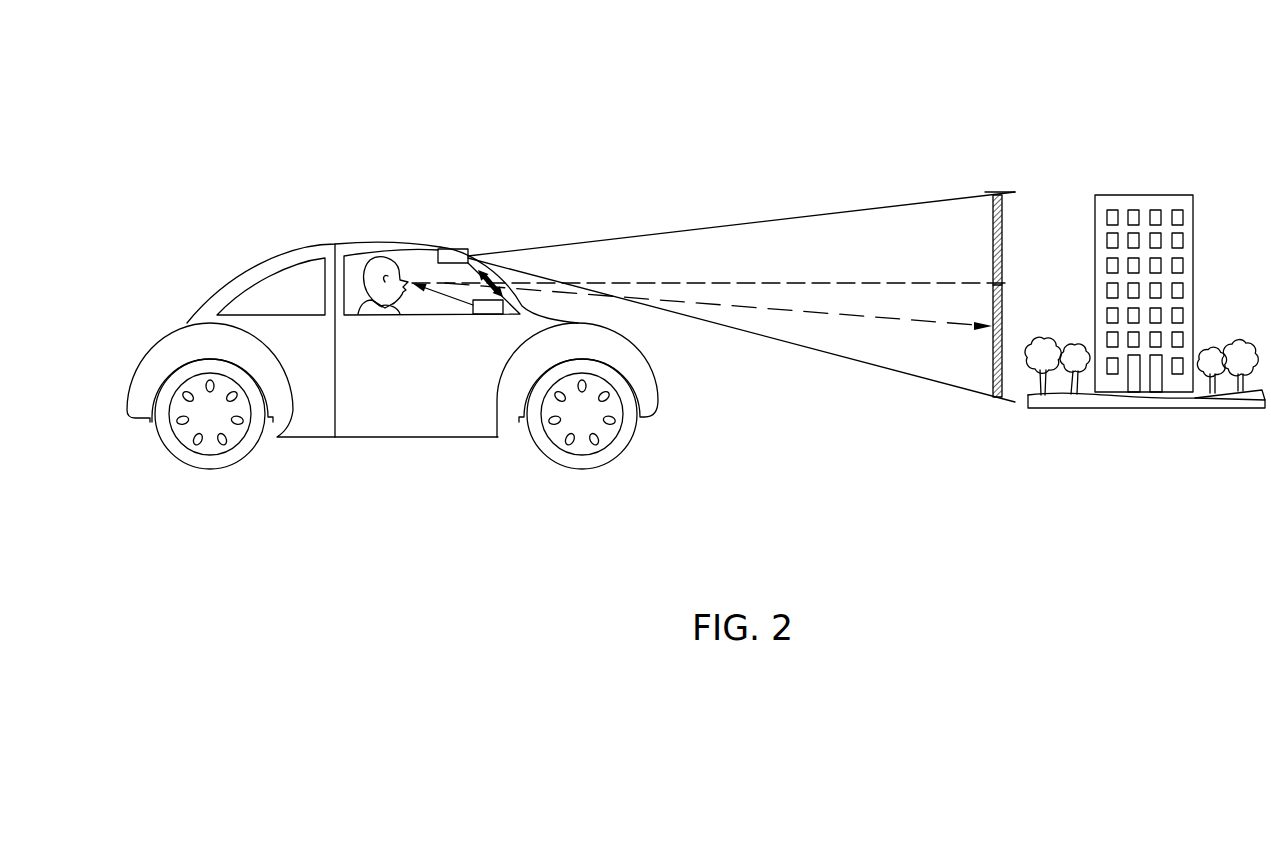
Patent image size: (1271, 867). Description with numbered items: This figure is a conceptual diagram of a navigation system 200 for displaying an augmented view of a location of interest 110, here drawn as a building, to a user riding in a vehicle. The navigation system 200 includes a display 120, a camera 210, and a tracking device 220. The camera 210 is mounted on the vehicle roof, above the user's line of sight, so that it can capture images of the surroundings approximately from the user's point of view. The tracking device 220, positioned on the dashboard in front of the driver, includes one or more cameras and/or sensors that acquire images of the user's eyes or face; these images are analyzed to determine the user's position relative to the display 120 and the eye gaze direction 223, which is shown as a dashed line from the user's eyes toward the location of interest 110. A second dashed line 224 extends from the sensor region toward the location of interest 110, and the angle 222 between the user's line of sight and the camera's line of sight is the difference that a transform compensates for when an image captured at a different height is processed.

The navigation system 200 is at (390, 178).
The camera 210 is at (450, 249).
The tracking device 220 is at (487, 314).
The display 120 is at (505, 270).
The eye gaze direction 223 is at (832, 283).
The sensor detection line 224 is at (765, 308).
The angle 222 is at (936, 283).
The location of interest 110 is at (1143, 158).